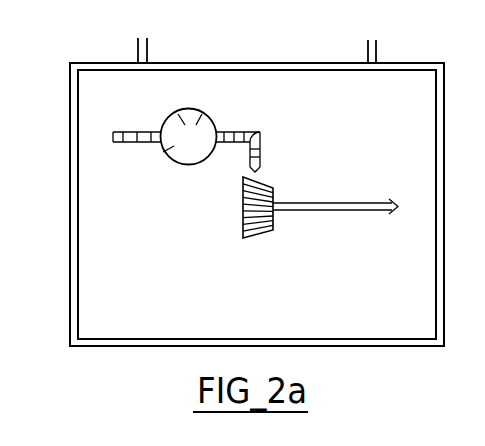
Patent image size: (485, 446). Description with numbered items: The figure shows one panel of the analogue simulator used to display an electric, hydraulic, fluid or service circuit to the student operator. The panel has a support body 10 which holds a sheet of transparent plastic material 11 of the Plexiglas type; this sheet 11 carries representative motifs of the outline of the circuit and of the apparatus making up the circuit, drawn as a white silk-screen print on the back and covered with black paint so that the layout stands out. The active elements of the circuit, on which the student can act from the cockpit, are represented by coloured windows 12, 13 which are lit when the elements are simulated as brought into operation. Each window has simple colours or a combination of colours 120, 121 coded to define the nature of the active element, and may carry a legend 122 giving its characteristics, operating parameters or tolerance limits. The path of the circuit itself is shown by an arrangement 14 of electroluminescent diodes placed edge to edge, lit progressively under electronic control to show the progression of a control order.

The support body 10 is at (76, 189).
The sheet of transparent plastic material 11 is at (95, 252).
The window 12 is at (201, 110).
The colour 120 is at (177, 110).
The colour 121 is at (207, 132).
The legend 122 is at (165, 152).
The window 13 is at (258, 227).
The arrangement of electroluminescent diodes 14 is at (261, 137).